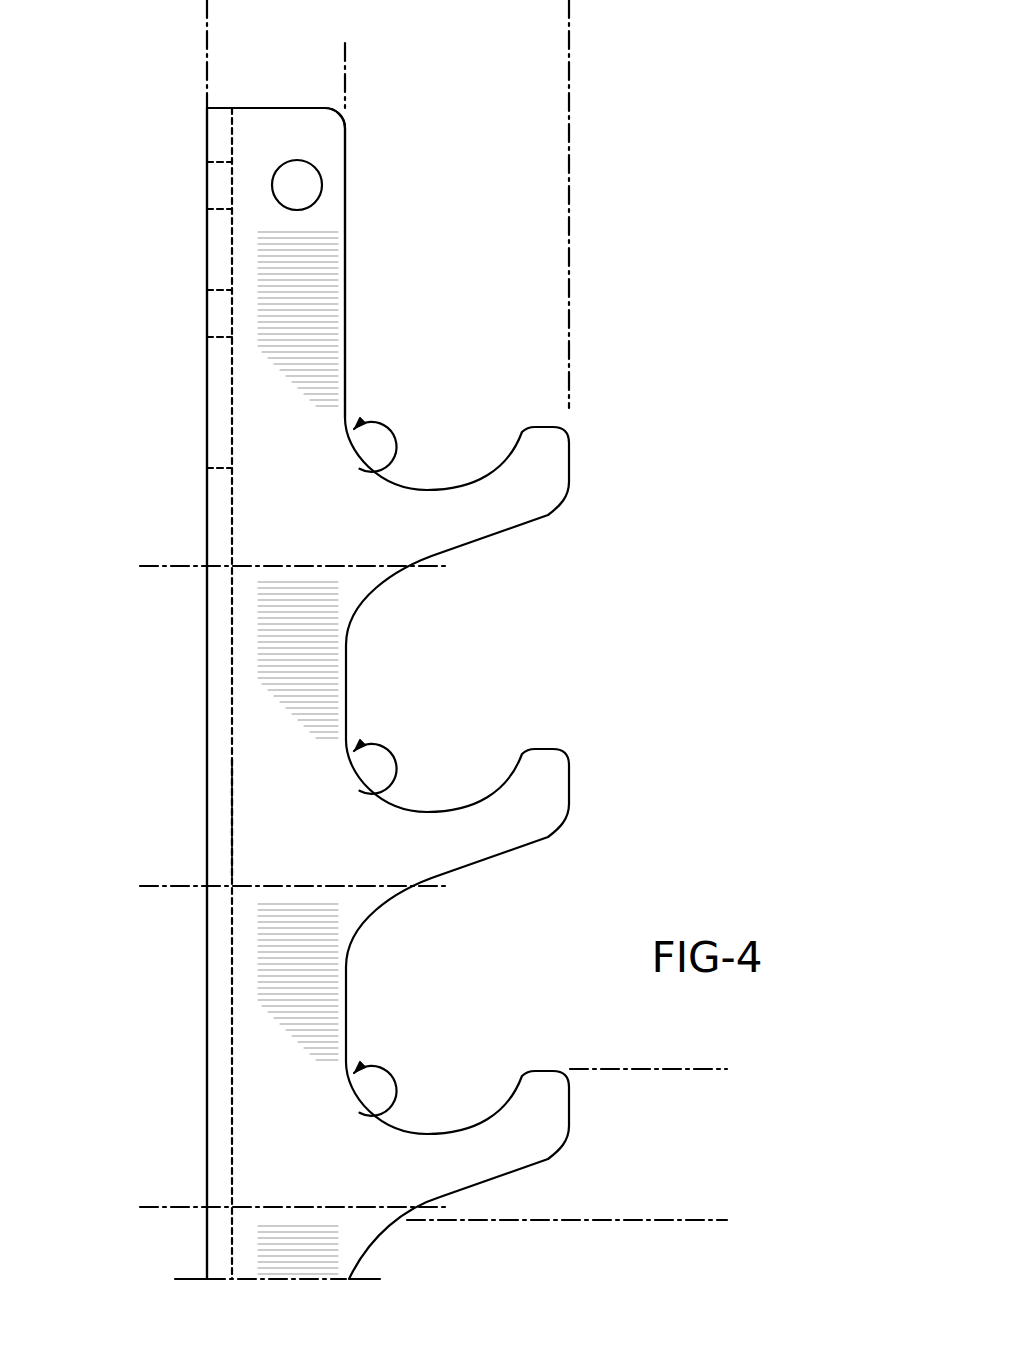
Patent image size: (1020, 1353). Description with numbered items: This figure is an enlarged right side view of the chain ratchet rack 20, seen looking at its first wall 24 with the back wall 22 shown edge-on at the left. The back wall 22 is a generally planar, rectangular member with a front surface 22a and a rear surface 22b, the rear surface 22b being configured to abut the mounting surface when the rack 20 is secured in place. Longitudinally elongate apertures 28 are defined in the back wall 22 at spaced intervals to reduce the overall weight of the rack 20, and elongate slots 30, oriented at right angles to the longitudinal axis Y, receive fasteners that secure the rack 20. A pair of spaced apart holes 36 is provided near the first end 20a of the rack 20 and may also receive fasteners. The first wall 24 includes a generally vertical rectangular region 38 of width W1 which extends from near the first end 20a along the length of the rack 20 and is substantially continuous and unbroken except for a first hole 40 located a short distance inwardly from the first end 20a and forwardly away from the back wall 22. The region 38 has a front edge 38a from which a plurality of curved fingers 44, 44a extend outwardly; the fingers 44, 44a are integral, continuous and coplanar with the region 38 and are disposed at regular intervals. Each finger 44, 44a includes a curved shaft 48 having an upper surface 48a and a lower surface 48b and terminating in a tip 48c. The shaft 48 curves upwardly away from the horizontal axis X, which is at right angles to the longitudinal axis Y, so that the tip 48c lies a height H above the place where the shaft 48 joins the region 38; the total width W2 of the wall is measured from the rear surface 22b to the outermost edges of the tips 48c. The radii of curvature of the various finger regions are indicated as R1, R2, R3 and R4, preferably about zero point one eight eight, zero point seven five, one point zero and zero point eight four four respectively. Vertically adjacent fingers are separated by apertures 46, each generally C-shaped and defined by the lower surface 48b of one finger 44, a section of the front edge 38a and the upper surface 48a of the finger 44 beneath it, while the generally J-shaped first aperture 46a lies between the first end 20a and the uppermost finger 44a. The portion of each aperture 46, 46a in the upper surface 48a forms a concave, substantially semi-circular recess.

The rack 20 is at (656, 271).
The first end 20a is at (198, 100).
The back wall 22 is at (205, 247).
The front surface 22a is at (233, 450).
The rear surface 22b is at (207, 407).
The first wall 24 is at (290, 760).
The aperture 28 is at (230, 800).
The slot 30 is at (216, 313).
The hole 36 is at (216, 184).
The vertical rectangular region 38 is at (315, 248).
The front edge 38a is at (350, 287).
The first hole 40 is at (300, 186).
The finger 44 is at (560, 828).
The uppermost finger 44a is at (564, 500).
The aperture 46 is at (380, 795).
The first aperture 46a is at (378, 473).
The shaft 48 is at (465, 546).
The upper surface 48a is at (465, 487).
The lower surface 48b is at (487, 545).
The tip 48c is at (540, 425).
The radius of curvature R1 is at (571, 427).
The radius of curvature R2 is at (552, 519).
The radius of curvature R3 is at (380, 593).
The radius of curvature R4 is at (424, 487).
The height H is at (718, 1070).
The width of region W1 is at (344, 43).
The total width W2 is at (208, 6).
The horizontal axis X is at (152, 566).
The longitudinal axis Y is at (207, 20).